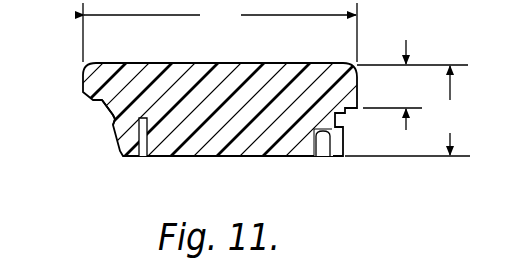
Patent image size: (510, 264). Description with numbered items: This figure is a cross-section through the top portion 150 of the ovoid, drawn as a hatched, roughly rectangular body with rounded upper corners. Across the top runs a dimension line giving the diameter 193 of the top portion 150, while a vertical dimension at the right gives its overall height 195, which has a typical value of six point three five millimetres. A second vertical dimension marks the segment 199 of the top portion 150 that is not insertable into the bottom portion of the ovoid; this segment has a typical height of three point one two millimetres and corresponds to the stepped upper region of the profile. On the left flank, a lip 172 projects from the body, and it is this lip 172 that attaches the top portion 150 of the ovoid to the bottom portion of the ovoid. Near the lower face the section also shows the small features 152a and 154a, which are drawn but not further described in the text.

The top portion of ovoid 150 is at (277, 63).
The slot 152a is at (143, 156).
The locating pin 154a is at (323, 157).
The lip 172 is at (113, 124).
The diameter 193 is at (220, 31).
The overall height 195 is at (407, 111).
The segment of top portion not insertable into bottom portion 199 is at (412, 85).